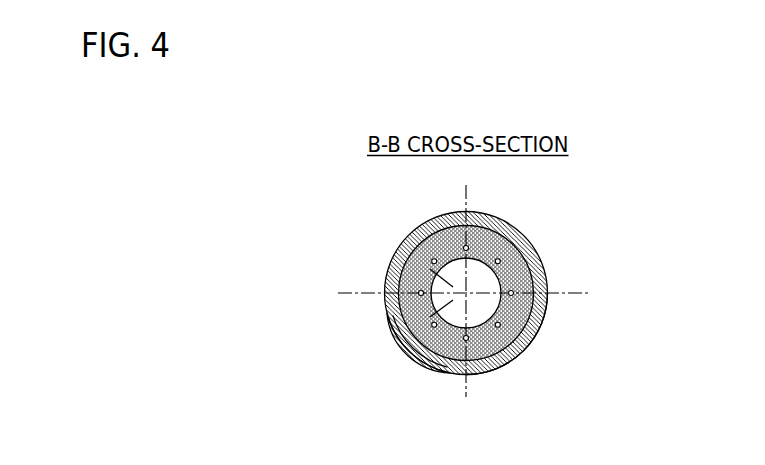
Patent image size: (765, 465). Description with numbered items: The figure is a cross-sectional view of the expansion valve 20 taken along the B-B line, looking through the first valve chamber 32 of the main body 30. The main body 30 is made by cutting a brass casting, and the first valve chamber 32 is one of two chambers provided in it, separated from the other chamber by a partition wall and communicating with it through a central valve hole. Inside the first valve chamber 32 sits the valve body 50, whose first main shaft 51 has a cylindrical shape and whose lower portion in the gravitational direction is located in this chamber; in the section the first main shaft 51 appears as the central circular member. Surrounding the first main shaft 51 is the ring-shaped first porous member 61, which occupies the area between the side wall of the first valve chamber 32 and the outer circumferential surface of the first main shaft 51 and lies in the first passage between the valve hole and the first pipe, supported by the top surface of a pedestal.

The expansion valve 20 is at (393, 233).
The main body 30 is at (523, 229).
The first valve chamber 32 is at (540, 251).
The valve body 50 is at (399, 274).
The first main shaft 51 is at (387, 312).
The first porous member 61 is at (523, 345).